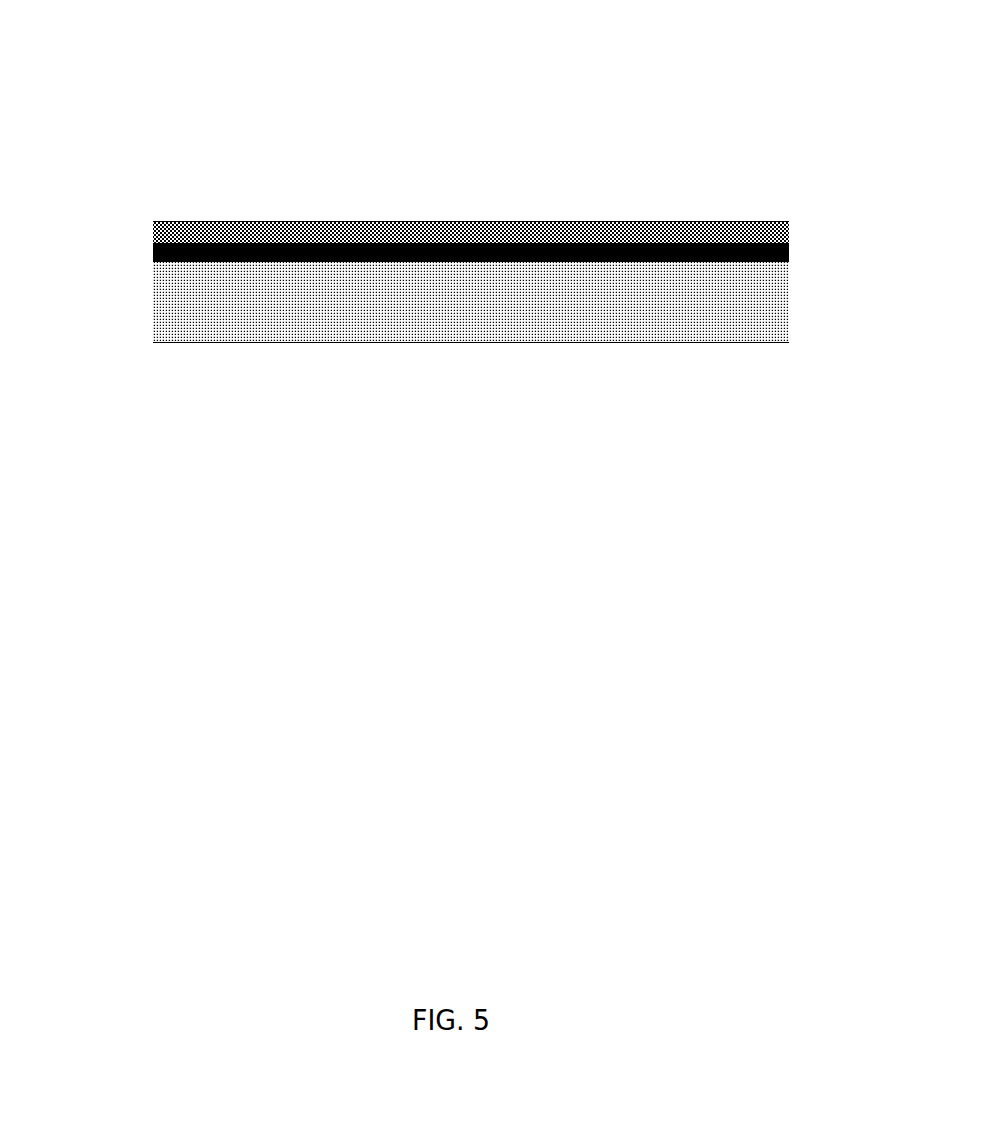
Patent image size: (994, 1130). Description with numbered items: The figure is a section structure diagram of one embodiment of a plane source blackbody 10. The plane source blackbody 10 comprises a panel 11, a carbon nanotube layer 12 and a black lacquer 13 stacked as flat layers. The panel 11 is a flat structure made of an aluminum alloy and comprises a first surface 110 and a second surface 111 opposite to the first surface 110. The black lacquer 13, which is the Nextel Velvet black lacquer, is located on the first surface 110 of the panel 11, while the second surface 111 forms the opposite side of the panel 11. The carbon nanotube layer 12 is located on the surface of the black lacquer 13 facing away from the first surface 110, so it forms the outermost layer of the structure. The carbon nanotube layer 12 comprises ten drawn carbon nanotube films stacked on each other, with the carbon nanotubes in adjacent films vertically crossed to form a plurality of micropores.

The plane source blackbody 10 is at (473, 255).
The panel 11 is at (512, 375).
The carbon nanotube layer 12 is at (507, 178).
The black lacquer 13 is at (153, 250).
The first surface 110 is at (745, 219).
The second surface 111 is at (745, 343).